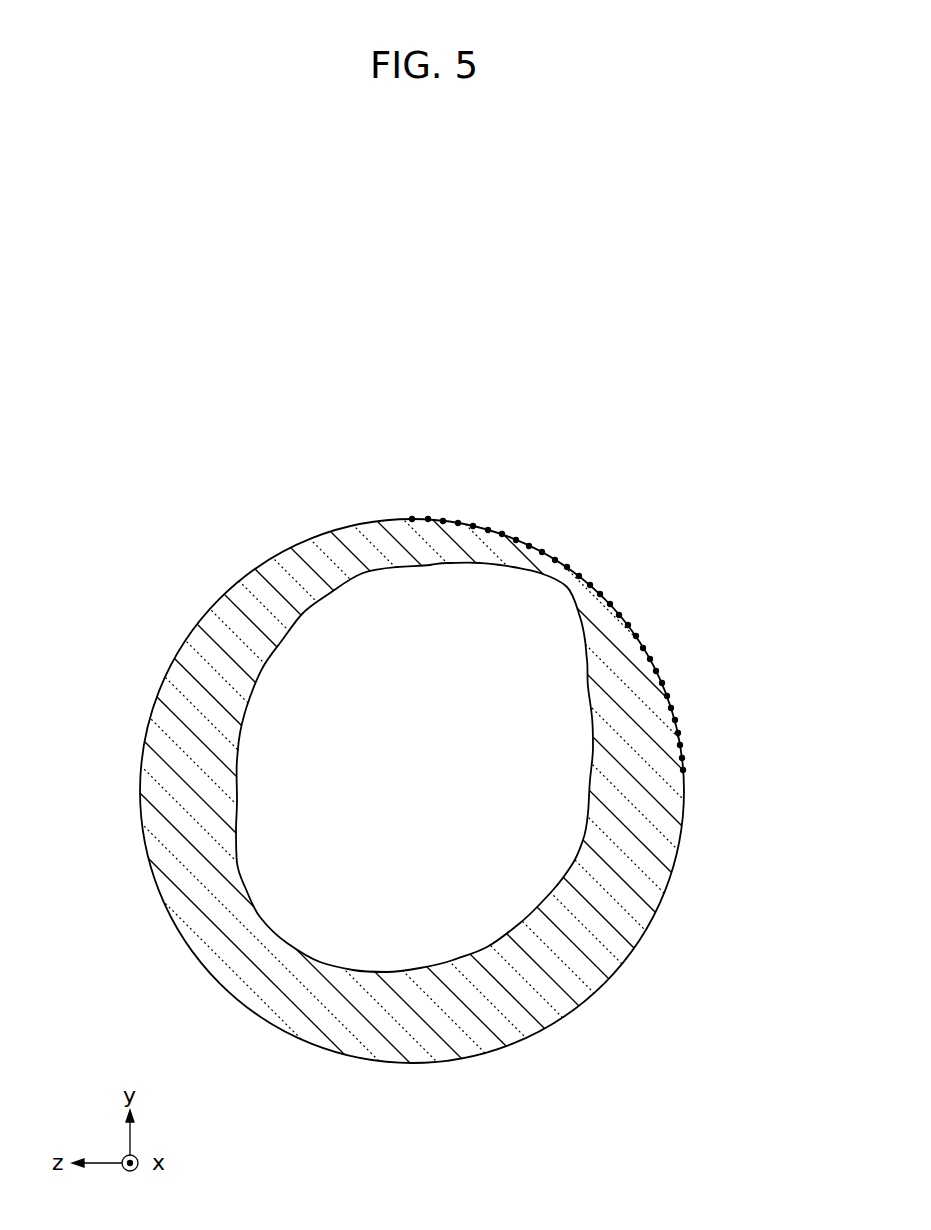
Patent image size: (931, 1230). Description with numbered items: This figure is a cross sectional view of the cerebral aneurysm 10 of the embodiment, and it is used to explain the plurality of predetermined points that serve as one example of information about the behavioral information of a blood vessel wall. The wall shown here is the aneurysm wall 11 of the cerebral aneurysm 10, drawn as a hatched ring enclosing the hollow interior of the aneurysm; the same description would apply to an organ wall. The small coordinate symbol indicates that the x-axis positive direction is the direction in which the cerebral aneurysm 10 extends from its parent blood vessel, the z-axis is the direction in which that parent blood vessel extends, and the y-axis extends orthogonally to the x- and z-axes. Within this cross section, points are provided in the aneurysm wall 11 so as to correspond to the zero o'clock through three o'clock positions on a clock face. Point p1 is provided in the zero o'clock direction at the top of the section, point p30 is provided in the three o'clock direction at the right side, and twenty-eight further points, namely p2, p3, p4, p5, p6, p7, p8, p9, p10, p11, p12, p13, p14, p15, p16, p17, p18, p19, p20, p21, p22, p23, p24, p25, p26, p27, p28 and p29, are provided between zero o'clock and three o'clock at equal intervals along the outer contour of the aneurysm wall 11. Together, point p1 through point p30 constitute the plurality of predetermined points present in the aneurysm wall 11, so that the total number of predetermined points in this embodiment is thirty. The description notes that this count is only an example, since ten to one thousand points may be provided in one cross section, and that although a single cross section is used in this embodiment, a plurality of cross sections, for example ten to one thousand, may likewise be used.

The cerebral aneurysm 10 is at (203, 468).
The aneurysm wall 11 is at (208, 617).
The point p1 is at (412, 519).
The point p2 is at (428, 519).
The point p3 is at (443, 521).
The point p4 is at (458, 523).
The point p5 is at (473, 526).
The point p6 is at (488, 530).
The point p7 is at (502, 534).
The point p8 is at (516, 540).
The point p9 is at (529, 546).
The point p10 is at (542, 552).
The point p11 is at (555, 560).
The point p12 is at (567, 567).
The point p13 is at (579, 576).
The point p14 is at (590, 585).
The point p15 is at (600, 594).
The point p16 is at (610, 604).
The point p17 is at (619, 615).
The point p18 is at (628, 625).
The point p19 is at (636, 636).
The point p20 is at (643, 648).
The point p21 is at (650, 659).
The point p22 is at (656, 671).
The point p23 is at (662, 683).
The point p24 is at (667, 696).
The point p25 is at (671, 708).
The point p26 is at (675, 720).
The point p27 is at (678, 733).
The point p28 is at (680, 745).
The point p29 is at (682, 758).
The point p30 is at (683, 770).